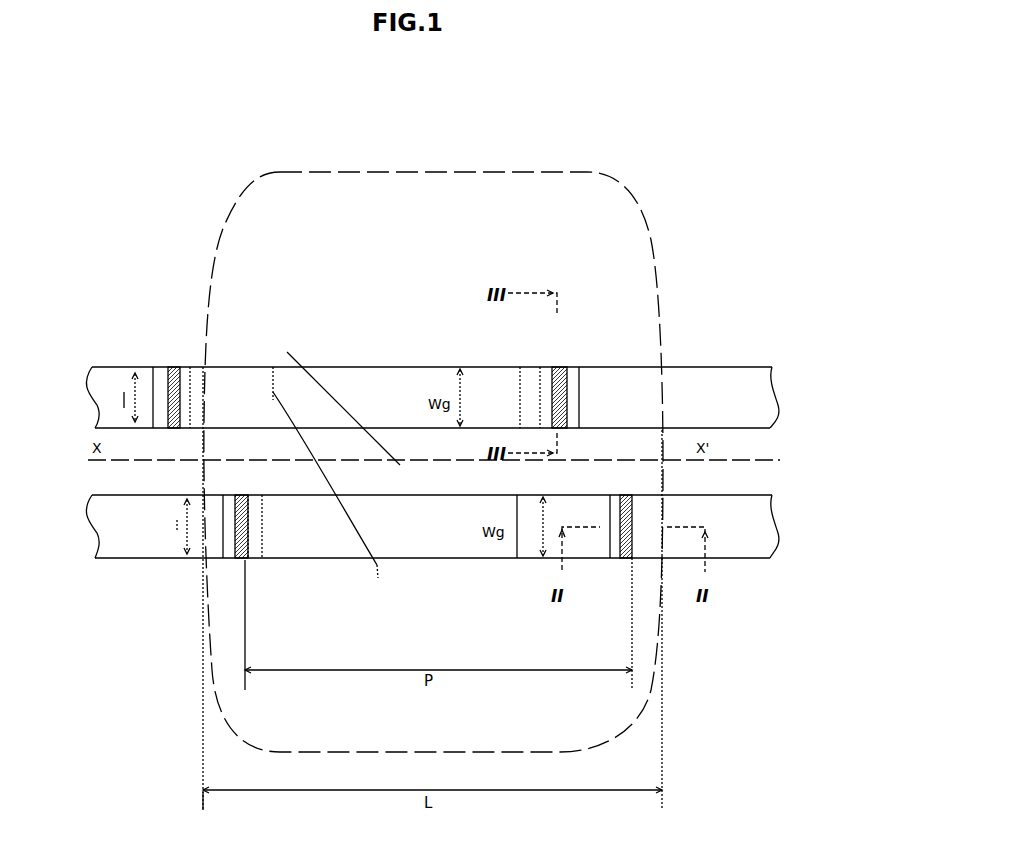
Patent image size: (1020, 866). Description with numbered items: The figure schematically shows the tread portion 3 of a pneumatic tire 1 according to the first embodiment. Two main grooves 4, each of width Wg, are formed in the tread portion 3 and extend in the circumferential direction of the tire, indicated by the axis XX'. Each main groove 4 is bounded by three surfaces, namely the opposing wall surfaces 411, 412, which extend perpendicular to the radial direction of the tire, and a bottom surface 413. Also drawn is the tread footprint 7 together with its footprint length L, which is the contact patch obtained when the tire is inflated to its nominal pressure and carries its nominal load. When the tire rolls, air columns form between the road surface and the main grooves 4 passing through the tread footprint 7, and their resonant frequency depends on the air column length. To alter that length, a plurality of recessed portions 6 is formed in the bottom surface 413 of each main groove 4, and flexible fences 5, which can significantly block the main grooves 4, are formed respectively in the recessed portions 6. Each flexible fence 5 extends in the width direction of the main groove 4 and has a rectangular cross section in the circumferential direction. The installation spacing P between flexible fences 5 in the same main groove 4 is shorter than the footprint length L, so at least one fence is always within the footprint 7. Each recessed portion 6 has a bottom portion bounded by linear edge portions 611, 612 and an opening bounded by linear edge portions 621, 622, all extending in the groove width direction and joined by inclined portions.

The pneumatic tire 1 is at (630, 290).
The tread portion 3 is at (372, 352).
The main grooves 4 is at (730, 408).
The flexible fences 5 is at (170, 392).
The recessed portions 6 is at (174, 372).
The tread footprint 7 is at (218, 240).
The wall surface 411 is at (695, 367).
The wall surface 412 is at (679, 428).
The bottom surface 413 is at (262, 408).
The edge portion of bottom portion 611 is at (567, 400).
The edge portion of bottom portion 612 is at (549, 380).
The edge portion of opening 621 is at (582, 402).
The edge portion of opening 622 is at (540, 385).